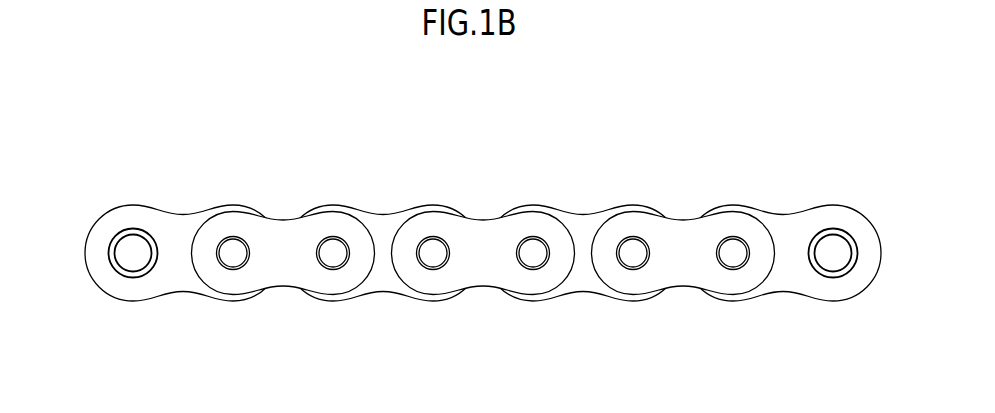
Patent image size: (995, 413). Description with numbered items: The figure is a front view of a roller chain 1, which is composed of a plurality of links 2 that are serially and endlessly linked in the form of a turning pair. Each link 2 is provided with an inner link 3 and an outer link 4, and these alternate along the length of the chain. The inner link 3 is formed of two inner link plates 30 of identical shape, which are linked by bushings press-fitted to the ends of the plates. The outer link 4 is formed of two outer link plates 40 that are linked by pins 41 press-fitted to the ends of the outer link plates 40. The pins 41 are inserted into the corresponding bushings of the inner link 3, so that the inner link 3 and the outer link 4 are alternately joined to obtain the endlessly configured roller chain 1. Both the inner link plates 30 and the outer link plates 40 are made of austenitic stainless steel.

The roller chain 1 is at (590, 160).
The link 2 is at (338, 180).
The inner link 3 is at (368, 208).
The outer link 4 is at (470, 208).
The inner link plate 30 is at (788, 231).
The outer link plate 40 is at (680, 231).
The pin 41 is at (732, 255).